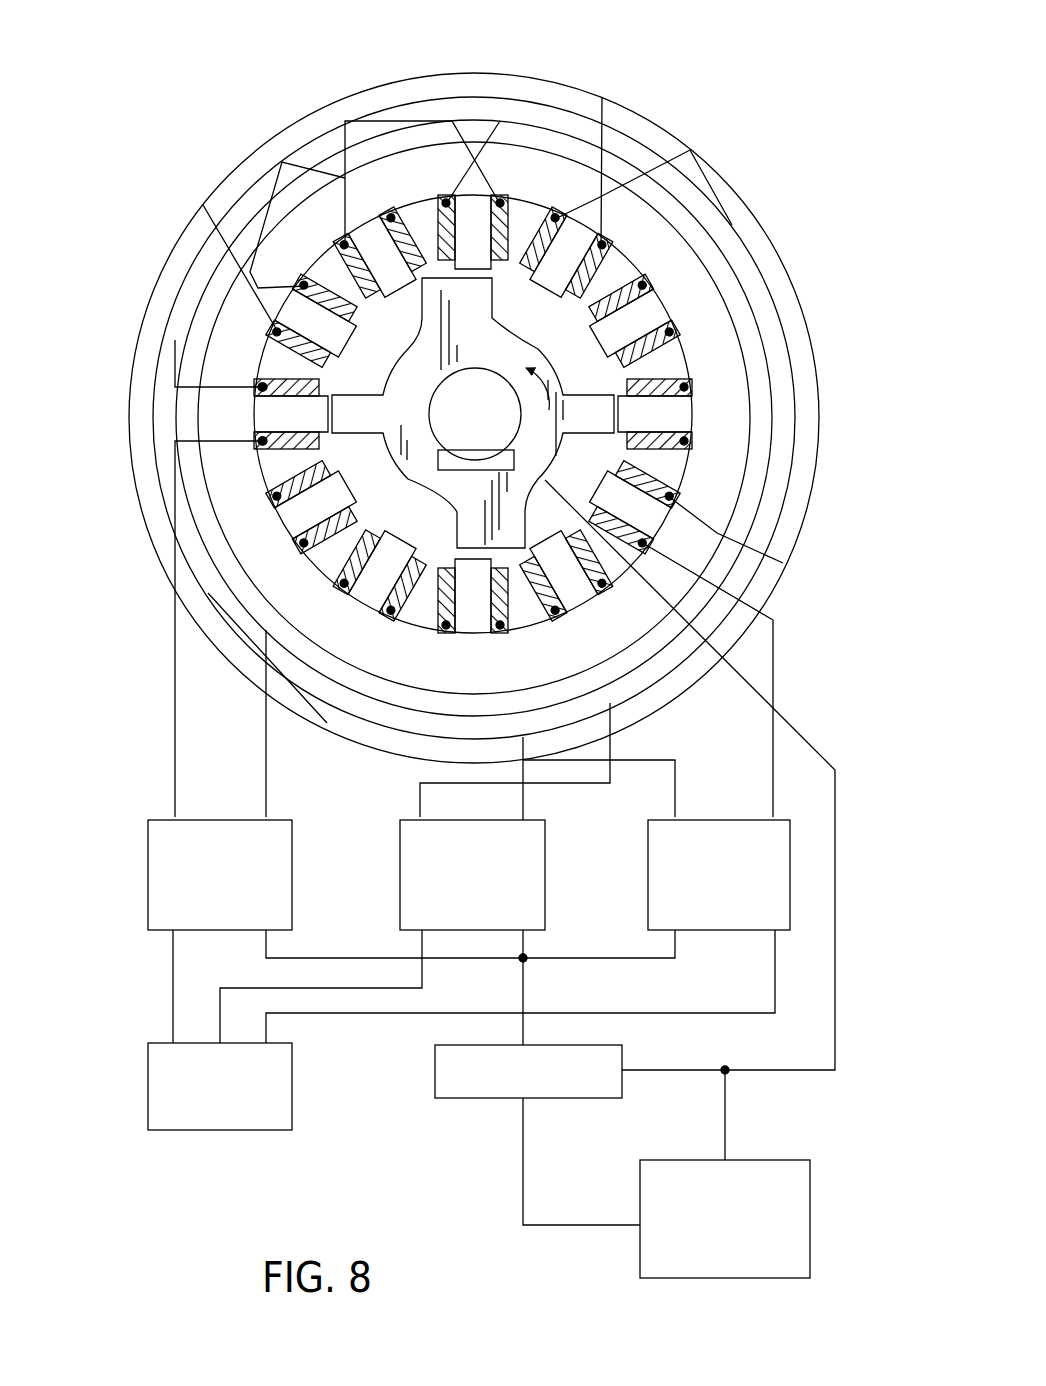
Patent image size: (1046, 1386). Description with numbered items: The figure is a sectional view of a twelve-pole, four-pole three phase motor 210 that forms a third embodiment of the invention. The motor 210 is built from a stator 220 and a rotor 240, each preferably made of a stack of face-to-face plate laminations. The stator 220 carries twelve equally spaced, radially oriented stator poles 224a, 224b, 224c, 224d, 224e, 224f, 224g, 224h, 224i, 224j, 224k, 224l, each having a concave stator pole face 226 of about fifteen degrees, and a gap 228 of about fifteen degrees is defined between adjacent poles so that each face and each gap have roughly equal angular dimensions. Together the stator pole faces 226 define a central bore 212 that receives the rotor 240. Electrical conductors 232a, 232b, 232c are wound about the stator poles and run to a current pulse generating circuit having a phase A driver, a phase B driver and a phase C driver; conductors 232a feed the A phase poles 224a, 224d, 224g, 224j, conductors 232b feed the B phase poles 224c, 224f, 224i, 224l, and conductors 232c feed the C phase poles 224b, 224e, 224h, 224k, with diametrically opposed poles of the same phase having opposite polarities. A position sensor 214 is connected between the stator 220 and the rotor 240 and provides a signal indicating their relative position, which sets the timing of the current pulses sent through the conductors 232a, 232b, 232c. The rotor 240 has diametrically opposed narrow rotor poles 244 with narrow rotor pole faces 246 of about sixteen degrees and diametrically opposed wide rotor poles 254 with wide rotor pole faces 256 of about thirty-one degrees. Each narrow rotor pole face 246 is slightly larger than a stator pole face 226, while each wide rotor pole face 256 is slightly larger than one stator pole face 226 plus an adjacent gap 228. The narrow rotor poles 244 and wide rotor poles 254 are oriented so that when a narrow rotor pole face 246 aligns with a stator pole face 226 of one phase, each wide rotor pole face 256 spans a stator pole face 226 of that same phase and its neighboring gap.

The three phase motor 210 is at (303, 77).
The central bore 212 is at (590, 303).
The position sensor 214 is at (455, 470).
The stator 220 is at (652, 200).
The stator pole 224a is at (478, 228).
The stator pole 224b is at (568, 250).
The stator pole 224c is at (641, 286).
The stator pole 224d is at (670, 420).
The stator pole 224e is at (643, 508).
The stator pole 224f is at (572, 587).
The stator pole 224g is at (478, 617).
The stator pole 224h is at (370, 587).
The stator pole 224i is at (278, 496).
The stator pole 224j is at (258, 383).
The stator pole 224k is at (305, 286).
The stator pole 224l is at (391, 219).
The stator pole face 226 is at (543, 300).
The gap 228 is at (602, 375).
The electrical conductors 232a is at (173, 770).
The electrical conductors 232b is at (420, 790).
The electrical conductors 232c is at (675, 800).
The rotor 240 is at (572, 448).
The narrow rotor poles 244 is at (263, 441).
The narrow rotor pole face 246 is at (263, 385).
The wide rotor poles 254 is at (455, 302).
The wide rotor pole face 256 is at (430, 250).